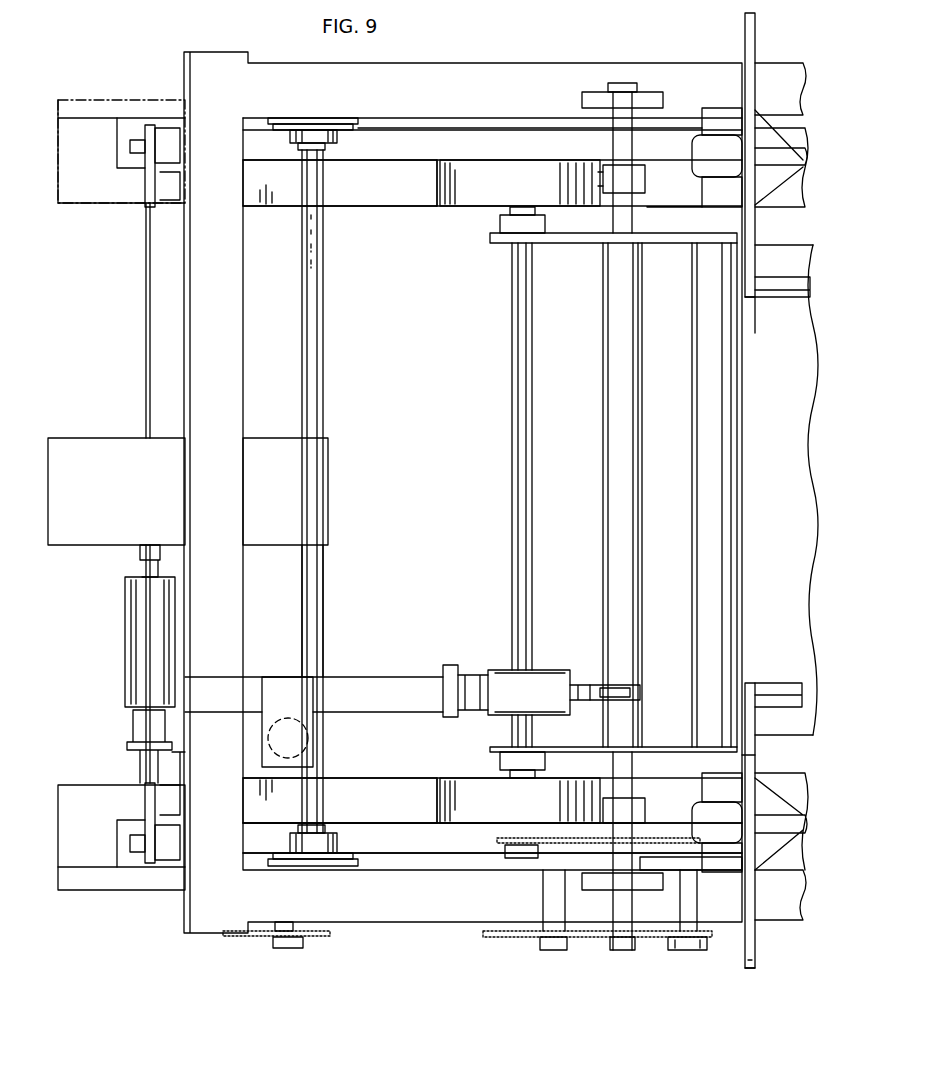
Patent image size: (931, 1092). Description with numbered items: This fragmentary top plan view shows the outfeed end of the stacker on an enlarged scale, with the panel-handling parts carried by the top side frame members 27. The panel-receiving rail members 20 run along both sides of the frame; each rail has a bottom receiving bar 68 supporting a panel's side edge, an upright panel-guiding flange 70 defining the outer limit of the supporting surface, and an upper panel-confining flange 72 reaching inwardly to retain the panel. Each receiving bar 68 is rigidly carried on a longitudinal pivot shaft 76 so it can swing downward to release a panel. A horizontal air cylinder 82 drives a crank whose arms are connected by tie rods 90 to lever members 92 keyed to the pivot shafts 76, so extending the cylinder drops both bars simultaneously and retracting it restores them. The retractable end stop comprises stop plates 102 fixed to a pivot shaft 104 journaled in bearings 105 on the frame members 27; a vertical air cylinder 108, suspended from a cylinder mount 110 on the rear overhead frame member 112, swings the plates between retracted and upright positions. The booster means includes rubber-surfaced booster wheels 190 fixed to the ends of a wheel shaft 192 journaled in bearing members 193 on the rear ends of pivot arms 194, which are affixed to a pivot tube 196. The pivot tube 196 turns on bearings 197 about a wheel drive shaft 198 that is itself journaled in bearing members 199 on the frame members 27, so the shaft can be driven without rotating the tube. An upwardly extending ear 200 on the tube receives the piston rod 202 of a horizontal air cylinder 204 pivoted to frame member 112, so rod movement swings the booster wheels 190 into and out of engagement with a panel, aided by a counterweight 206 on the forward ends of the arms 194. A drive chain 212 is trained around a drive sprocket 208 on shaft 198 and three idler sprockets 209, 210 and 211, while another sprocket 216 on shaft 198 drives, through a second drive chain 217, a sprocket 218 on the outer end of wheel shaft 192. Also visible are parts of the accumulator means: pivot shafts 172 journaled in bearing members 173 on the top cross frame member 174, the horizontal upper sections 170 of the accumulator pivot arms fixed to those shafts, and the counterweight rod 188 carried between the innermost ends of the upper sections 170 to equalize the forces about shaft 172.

The top side frame member 27 is at (498, 64).
The pivot shaft 76 is at (136, 140).
The lever member 92 is at (147, 177).
The tie rod 90 is at (146, 322).
The air cylinder 82 is at (125, 668).
The bearings 105 is at (336, 138).
The stop plates 102 is at (324, 254).
The pivot shaft 104 is at (324, 604).
The panel-receiving rail members 20 is at (346, 208).
The receiving bar 68 is at (368, 780).
The upper panel-confining flange 72 is at (398, 780).
The upright panel-guiding flange 70 is at (418, 826).
The booster wheels 190 is at (506, 194).
The rear overhead frame member 112 is at (345, 674).
The cylinder mount 110 is at (262, 748).
The vertical air cylinder 108 is at (295, 718).
The horizontal air cylinder 204 is at (546, 670).
The piston rod 202 is at (590, 685).
The ear 200 is at (610, 690).
The bearing members 193 is at (500, 222).
The pivot arms 194 is at (565, 243).
The wheel shaft 192 is at (512, 555).
The pivot tube 196 is at (603, 548).
The counterweight 206 is at (695, 626).
The wheel drive shaft 198 is at (612, 148).
The bearing members 199 is at (658, 102).
The bearings 197 is at (645, 178).
The bearing members 173 is at (733, 168).
The sprocket 216 is at (655, 862).
The top cross frame member 174 is at (746, 763).
The horizontal upper section 170 is at (755, 234).
The counterweight rod 188 is at (810, 298).
The pivot shaft 172 is at (758, 140).
The drive chain 217 is at (581, 845).
The sprocket 218 is at (534, 862).
The drive chain 212 is at (519, 940).
The idler sprocket 210 is at (564, 940).
The drive sprocket 208 is at (622, 940).
The idler sprocket 209 is at (707, 938).
The idler sprocket 211 is at (292, 945).